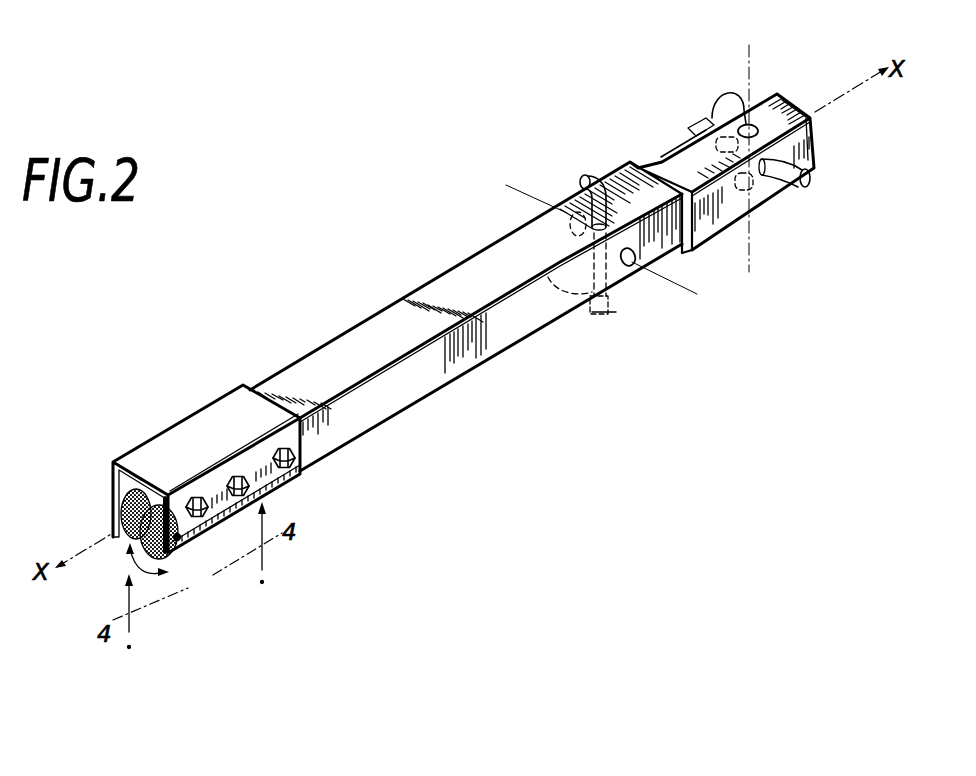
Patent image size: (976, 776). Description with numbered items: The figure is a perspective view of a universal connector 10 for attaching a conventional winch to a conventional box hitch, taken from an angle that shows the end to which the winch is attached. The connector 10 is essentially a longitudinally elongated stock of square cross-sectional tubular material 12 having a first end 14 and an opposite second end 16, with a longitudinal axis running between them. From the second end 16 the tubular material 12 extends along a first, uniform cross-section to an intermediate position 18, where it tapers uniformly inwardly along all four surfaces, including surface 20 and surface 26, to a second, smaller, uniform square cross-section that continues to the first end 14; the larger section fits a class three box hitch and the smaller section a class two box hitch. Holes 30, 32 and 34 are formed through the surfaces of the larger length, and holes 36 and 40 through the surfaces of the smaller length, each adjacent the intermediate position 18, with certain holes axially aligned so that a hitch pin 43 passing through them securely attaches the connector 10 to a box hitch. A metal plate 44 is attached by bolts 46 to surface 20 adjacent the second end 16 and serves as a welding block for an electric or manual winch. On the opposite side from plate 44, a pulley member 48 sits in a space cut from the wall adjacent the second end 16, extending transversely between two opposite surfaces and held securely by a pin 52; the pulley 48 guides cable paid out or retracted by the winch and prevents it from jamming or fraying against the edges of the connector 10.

The universal connector 10 is at (299, 286).
The tubular material 12 is at (405, 397).
The first end 14 is at (793, 100).
The second end 16 is at (113, 494).
The intermediate position 18 is at (688, 241).
The surface 20 is at (513, 253).
The surface 26 is at (345, 435).
The hole 30 is at (566, 208).
The hole 32 is at (593, 318).
The hole 34 is at (632, 266).
The hole 36 is at (758, 116).
The hole 40 is at (742, 190).
The hitch pin 43 is at (593, 180).
The metal plate 44 is at (207, 424).
The bolts 46 is at (238, 492).
The pulley member 48 is at (181, 583).
The pin 52 is at (185, 541).